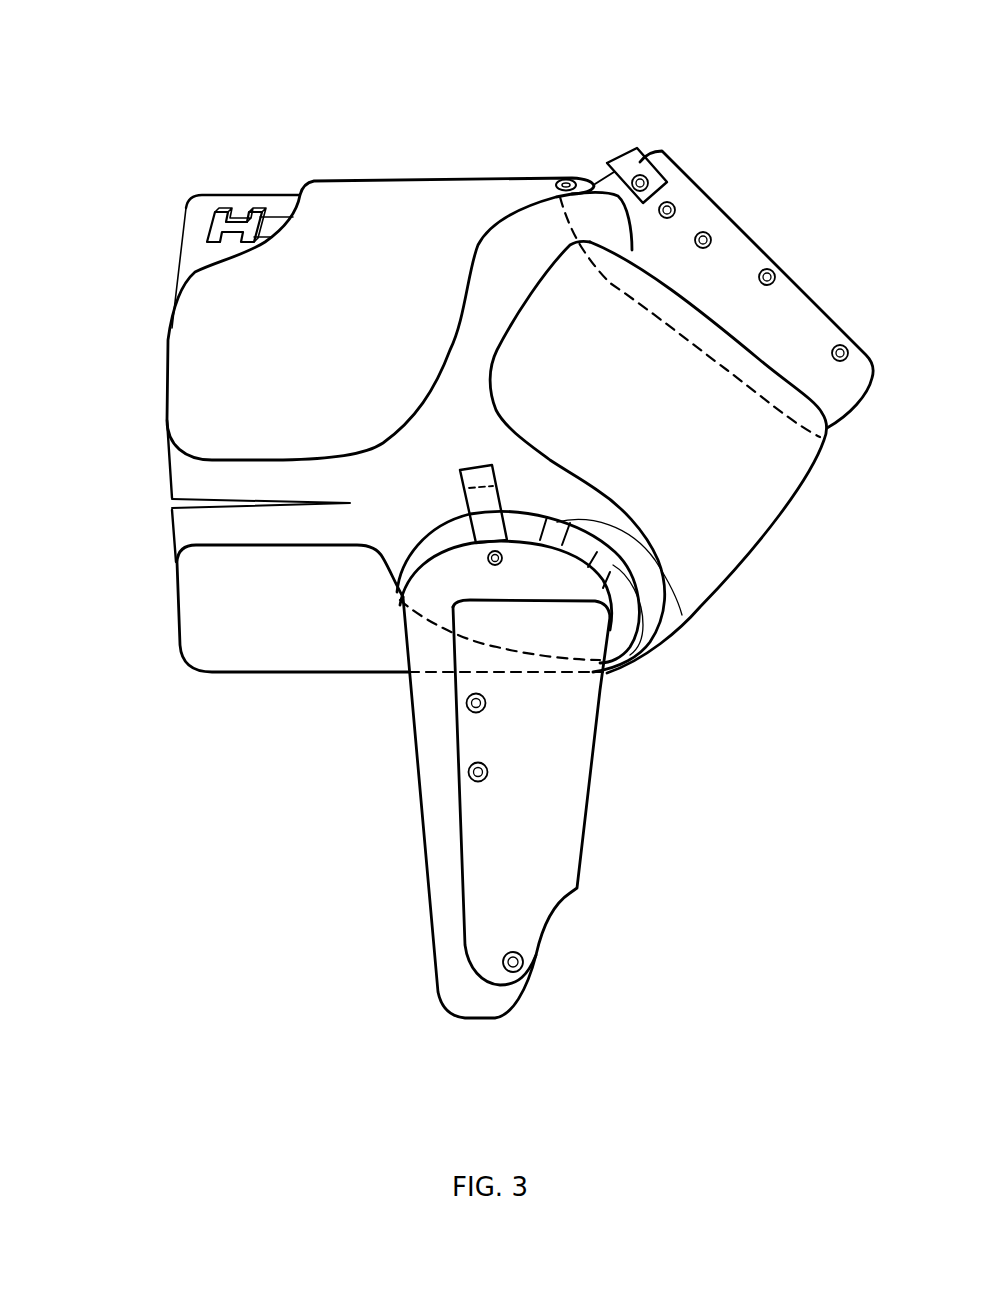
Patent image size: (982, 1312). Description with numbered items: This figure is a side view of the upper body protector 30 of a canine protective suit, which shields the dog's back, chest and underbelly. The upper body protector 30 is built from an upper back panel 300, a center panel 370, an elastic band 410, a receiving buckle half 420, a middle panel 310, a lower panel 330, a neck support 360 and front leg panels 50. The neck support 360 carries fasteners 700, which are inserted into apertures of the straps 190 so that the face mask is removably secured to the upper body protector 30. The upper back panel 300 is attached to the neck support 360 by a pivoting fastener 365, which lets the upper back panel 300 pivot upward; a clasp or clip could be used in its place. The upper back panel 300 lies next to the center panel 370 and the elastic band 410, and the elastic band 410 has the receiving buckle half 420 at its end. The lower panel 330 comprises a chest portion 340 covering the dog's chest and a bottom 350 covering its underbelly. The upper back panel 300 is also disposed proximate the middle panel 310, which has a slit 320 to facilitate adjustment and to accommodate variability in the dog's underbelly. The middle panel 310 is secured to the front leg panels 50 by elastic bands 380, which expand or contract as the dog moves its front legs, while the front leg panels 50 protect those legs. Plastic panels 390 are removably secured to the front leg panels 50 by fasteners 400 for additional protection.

The upper body protector 30 is at (443, 110).
The front leg panels 50 is at (433, 858).
The straps 190 is at (628, 163).
The upper back panel 300 is at (332, 198).
The middle panel 310 is at (190, 480).
The slit 320 is at (178, 507).
The lower panel 330 is at (653, 645).
The chest portion 340 is at (727, 503).
The bottom 350 is at (227, 650).
The neck support 360 is at (797, 317).
The pivoting fastener 365 is at (569, 178).
The center panel 370 is at (213, 202).
The elastic bands 380 is at (478, 507).
The plastic panels 390 is at (570, 777).
The fasteners 400 is at (468, 772).
The elastic band 410 is at (270, 223).
The receiving buckle half 420 is at (213, 218).
The fasteners 700 is at (710, 236).